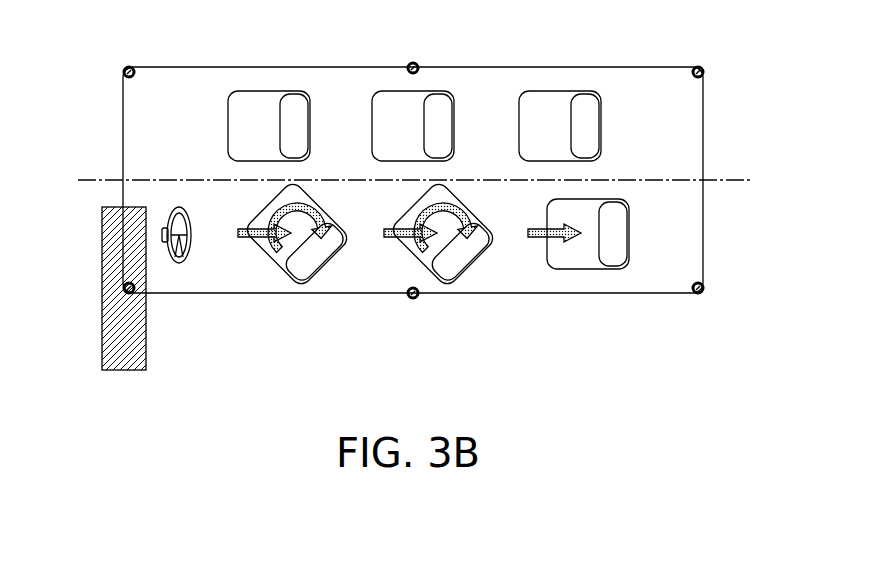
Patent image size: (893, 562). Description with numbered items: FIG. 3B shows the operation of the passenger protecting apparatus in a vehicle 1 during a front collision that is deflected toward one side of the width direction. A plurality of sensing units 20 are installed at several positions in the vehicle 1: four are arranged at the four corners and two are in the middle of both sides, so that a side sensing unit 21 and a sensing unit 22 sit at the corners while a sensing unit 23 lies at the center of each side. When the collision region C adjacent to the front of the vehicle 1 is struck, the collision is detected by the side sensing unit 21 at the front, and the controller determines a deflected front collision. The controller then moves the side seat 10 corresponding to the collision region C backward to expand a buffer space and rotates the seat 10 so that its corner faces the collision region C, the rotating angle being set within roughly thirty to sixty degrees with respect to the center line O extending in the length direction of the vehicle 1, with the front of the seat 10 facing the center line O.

The vehicle 1 is at (708, 137).
The seat 10 is at (585, 93).
The sensing units 20 is at (702, 358).
The side sensing unit 21 is at (129, 66).
The sensing unit 22 is at (698, 66).
The sensing unit 23 is at (413, 62).
The collision region C is at (105, 297).
The center line O is at (422, 180).